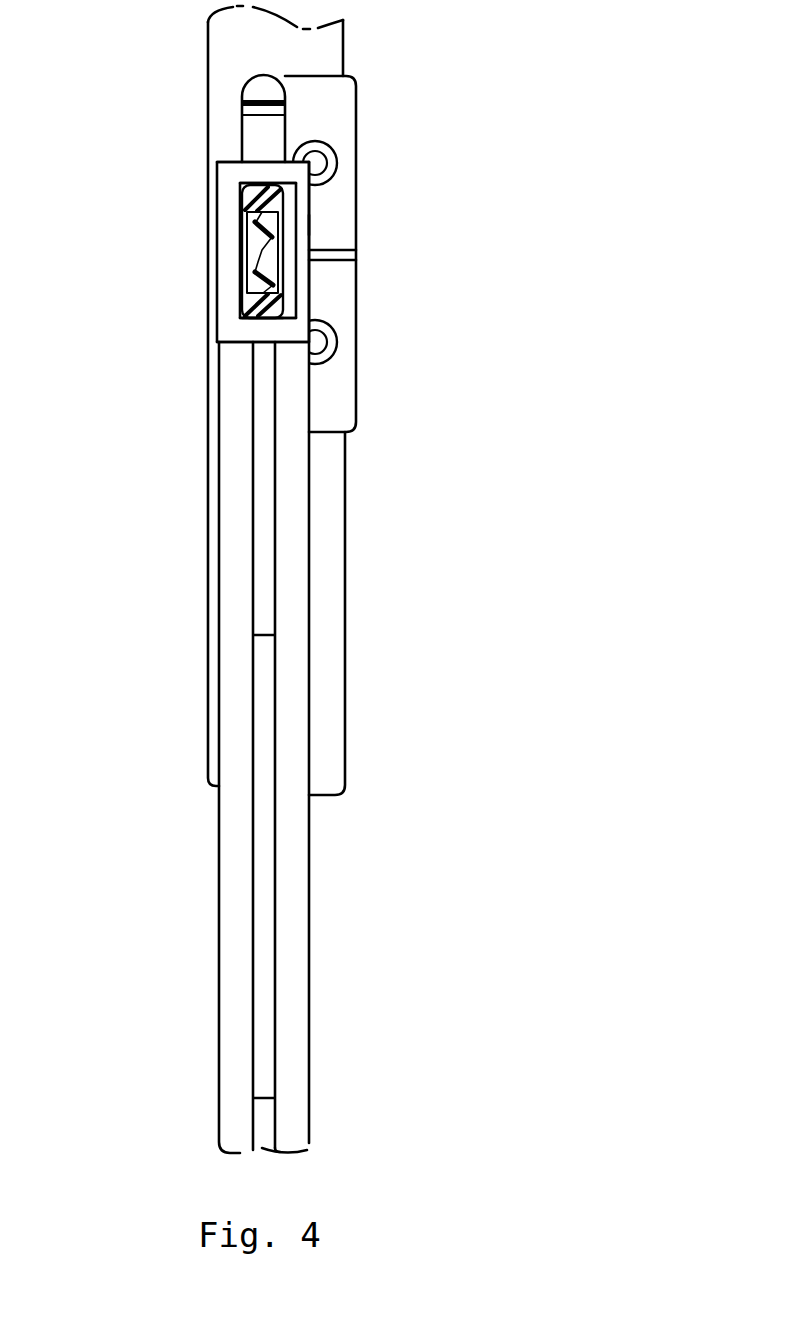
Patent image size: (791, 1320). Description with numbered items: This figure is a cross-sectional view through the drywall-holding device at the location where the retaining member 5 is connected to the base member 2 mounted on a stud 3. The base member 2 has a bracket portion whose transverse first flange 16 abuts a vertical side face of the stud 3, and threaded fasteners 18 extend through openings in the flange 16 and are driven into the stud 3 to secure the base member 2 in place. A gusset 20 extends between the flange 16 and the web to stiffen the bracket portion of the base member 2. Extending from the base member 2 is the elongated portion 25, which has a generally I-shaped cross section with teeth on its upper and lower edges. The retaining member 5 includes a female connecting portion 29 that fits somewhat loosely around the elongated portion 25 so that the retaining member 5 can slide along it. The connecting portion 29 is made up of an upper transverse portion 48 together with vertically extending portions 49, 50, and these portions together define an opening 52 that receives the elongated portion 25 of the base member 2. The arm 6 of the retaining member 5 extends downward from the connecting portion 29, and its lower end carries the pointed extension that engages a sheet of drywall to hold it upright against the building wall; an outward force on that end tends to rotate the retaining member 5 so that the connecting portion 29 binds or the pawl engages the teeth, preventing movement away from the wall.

The base member 2 is at (240, 115).
The stud 3 is at (330, 52).
The retaining member 5 is at (312, 1033).
The arm 6 is at (218, 1063).
The first flange 16 is at (328, 127).
The threaded fastener 18 is at (358, 165).
The gusset 20 is at (333, 247).
The elongated portion 25 is at (258, 262).
The female connecting portion 29 is at (223, 332).
The upper transverse portion 48 is at (262, 158).
The vertically extending portion 49 is at (310, 225).
The vertically extending portion 50 is at (210, 222).
The opening 52 is at (242, 338).